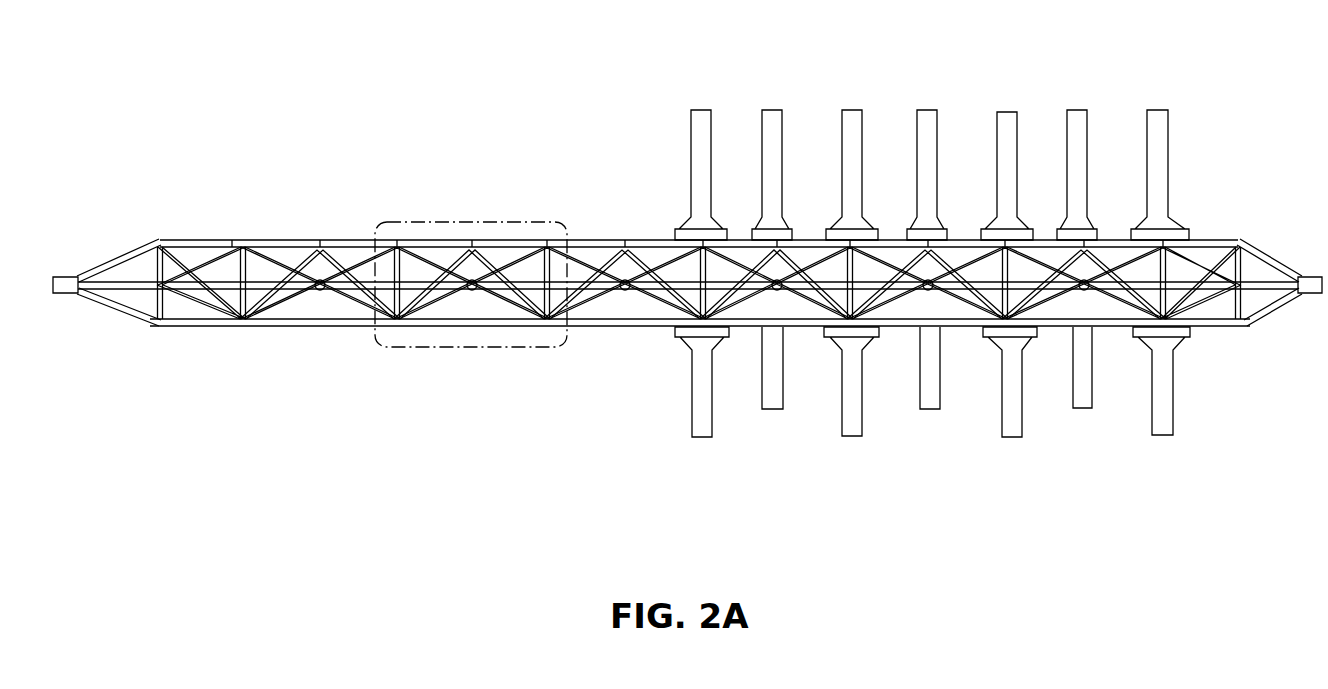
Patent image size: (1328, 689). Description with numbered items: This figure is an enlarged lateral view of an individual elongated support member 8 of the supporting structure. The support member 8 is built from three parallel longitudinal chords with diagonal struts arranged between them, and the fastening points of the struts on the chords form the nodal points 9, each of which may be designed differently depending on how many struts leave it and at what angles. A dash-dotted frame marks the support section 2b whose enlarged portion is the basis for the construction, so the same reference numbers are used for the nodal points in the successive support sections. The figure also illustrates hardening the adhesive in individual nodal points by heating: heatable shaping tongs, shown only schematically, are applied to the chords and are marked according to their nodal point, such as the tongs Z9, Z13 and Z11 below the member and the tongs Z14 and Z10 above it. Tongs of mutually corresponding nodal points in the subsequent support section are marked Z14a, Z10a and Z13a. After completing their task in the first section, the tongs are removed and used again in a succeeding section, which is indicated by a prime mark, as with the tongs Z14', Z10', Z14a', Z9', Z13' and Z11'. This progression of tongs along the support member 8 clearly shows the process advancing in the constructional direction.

The enlarged portion of support member 2b is at (376, 222).
The elongated support member 8 is at (263, 329).
The nodal point 9 is at (227, 327).
The heatable shaping tongs Z14 is at (696, 149).
The heatable shaping tongs Z10 is at (763, 129).
The heatable shaping tongs Z14a is at (847, 149).
The heatable shaping tongs Z10a is at (928, 118).
The heatable shaping tongs Z14' is at (999, 148).
The heatable shaping tongs Z10' is at (1063, 130).
The heatable shaping tongs Z14a' is at (1158, 148).
The heatable shaping tongs Z9 is at (702, 420).
The heatable shaping tongs Z13 is at (776, 400).
The heatable shaping tongs Z11 is at (851, 420).
The heatable shaping tongs Z13a is at (933, 402).
The heatable shaping tongs Z9' is at (1010, 420).
The heatable shaping tongs Z13' is at (1088, 400).
The heatable shaping tongs Z11' is at (1163, 420).